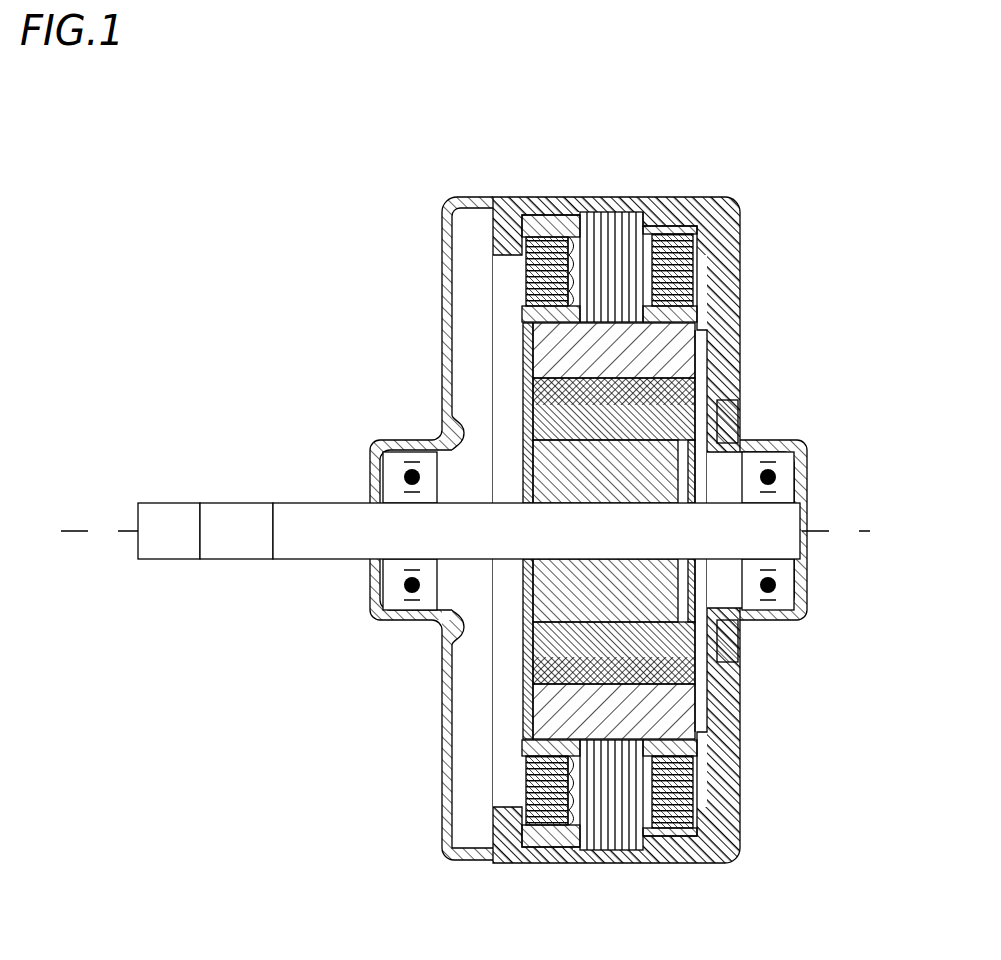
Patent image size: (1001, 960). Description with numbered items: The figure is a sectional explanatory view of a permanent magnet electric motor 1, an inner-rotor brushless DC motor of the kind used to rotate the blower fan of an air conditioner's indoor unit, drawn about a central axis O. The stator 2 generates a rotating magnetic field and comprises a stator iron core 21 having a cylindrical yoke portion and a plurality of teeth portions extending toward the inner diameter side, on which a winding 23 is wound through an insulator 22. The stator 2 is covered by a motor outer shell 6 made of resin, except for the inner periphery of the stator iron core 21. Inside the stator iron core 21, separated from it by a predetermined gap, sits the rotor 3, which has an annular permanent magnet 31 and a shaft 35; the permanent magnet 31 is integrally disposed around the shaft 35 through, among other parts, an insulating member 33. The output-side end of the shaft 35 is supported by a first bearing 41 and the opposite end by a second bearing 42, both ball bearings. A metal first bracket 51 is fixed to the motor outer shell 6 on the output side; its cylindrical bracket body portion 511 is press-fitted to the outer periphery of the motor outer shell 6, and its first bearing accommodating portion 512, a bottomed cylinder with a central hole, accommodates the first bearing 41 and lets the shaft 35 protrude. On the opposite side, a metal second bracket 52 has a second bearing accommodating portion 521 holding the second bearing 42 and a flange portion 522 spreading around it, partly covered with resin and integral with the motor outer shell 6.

The permanent magnet electric motor 1 is at (394, 185).
The central axis O is at (190, 526).
The stator 2 is at (665, 514).
The stator iron core 21 is at (584, 210).
The insulator 22 is at (700, 226).
The winding 23 is at (696, 268).
The rotor 3 is at (597, 528).
The permanent magnet 31 is at (710, 338).
The insulating member 33 is at (702, 660).
The shaft 35 is at (236, 500).
The first bearing 41 is at (372, 586).
The second bearing 42 is at (805, 476).
The first bracket 51 is at (387, 528).
The bracket body portion 511 is at (440, 386).
The first bearing accommodating portion 512 is at (372, 468).
The second bracket 52 is at (800, 519).
The second bearing accommodating portion 521 is at (805, 463).
The flange portion 522 is at (738, 423).
The motor outer shell 6 is at (700, 188).